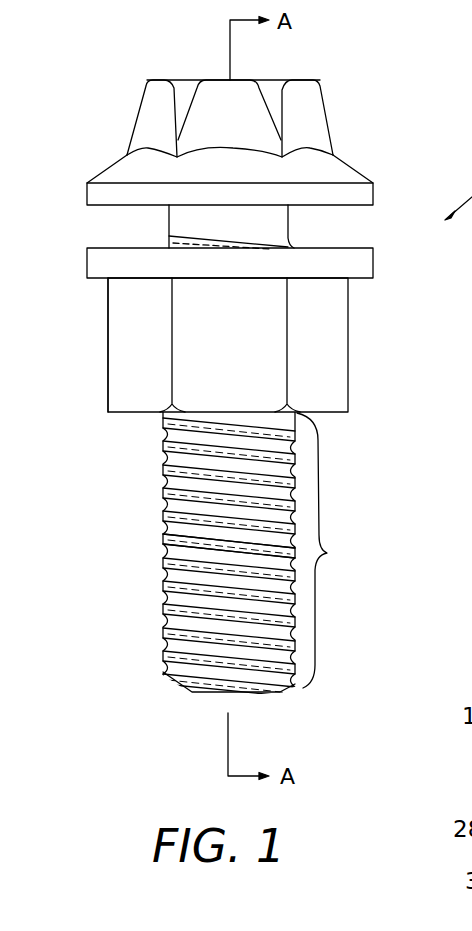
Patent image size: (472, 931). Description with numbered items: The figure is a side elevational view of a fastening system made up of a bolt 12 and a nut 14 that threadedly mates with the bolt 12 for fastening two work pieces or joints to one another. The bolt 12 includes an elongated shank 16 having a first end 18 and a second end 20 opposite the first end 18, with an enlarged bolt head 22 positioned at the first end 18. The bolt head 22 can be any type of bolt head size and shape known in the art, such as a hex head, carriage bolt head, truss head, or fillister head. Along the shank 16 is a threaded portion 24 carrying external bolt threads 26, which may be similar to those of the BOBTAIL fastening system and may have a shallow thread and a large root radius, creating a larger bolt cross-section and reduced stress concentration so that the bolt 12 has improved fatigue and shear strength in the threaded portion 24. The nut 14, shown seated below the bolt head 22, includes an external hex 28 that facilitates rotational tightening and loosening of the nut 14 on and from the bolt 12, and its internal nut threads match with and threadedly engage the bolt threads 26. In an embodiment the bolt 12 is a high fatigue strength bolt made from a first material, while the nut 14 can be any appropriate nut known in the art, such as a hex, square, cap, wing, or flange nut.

The bolt 12 is at (269, 126).
The nut 14 is at (247, 345).
The elongated shank 16 is at (214, 571).
The first end 18 is at (170, 205).
The second end 20 is at (191, 692).
The bolt head 22 is at (152, 105).
The threaded portion 24 is at (330, 550).
The bolt threads 26 is at (166, 534).
The external hex 28 is at (120, 342).